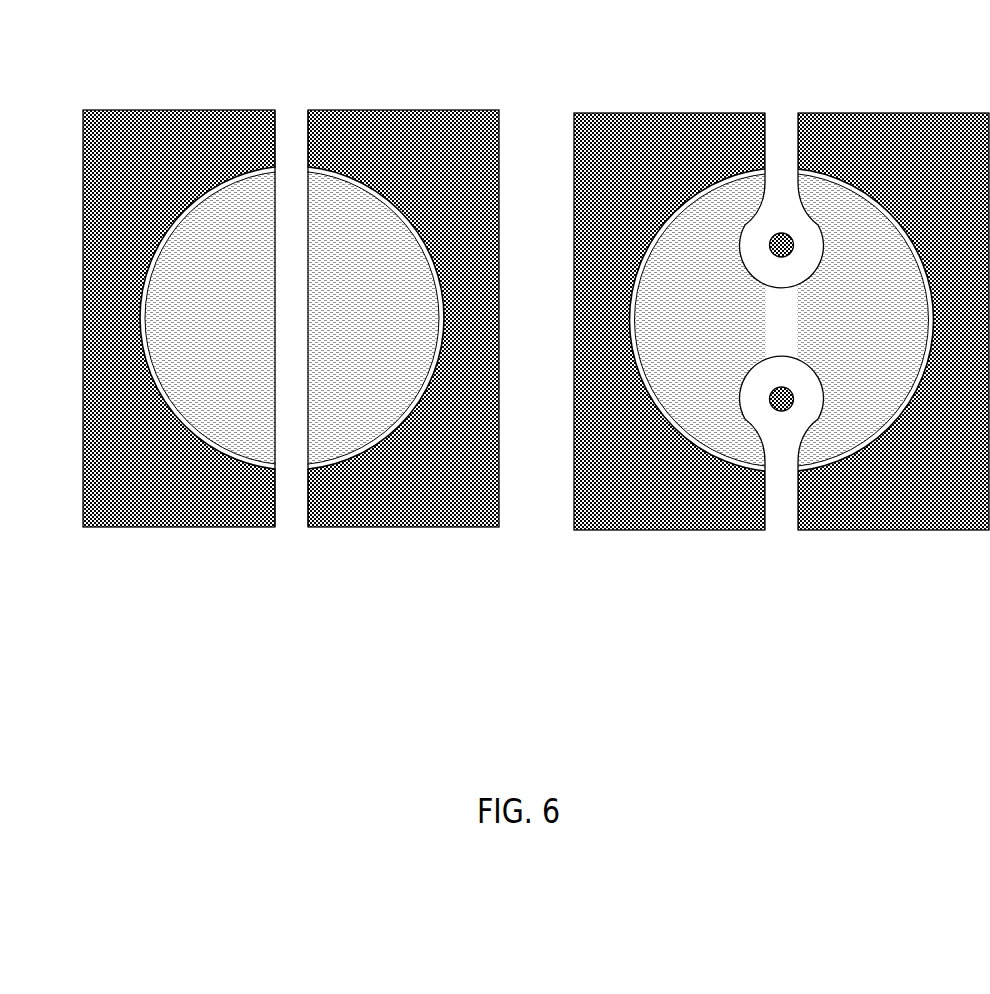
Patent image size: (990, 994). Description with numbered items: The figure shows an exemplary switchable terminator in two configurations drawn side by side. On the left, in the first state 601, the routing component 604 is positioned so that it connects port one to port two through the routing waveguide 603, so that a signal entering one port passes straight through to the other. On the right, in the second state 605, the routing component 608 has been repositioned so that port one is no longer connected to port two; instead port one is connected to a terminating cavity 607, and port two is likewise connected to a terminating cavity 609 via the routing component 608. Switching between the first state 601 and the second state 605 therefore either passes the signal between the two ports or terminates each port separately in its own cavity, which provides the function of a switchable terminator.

The first state 601 is at (291, 298).
The routing waveguide 603 is at (293, 275).
The routing component 604 is at (375, 257).
The second state 605 is at (781, 307).
The terminating cavity 607 is at (802, 420).
The routing component 608 is at (860, 257).
The terminating cavity 609 is at (777, 200).